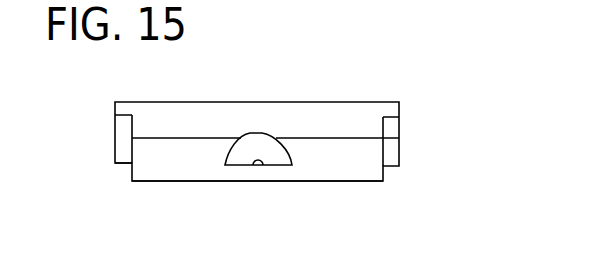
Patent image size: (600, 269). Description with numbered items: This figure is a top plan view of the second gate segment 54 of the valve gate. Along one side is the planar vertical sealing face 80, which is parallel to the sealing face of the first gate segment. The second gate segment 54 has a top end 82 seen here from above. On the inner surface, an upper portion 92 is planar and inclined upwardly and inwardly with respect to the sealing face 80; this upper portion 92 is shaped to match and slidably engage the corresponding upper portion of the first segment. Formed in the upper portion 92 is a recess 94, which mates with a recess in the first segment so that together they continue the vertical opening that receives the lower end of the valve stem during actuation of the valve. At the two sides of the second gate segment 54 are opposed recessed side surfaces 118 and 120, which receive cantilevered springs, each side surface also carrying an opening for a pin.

The second gate segment 54 is at (445, 103).
The sealing face 80 is at (272, 102).
The top end 82 is at (333, 122).
The upper portion 92 is at (340, 163).
The recess 94 is at (248, 148).
The recessed side surface 118 is at (384, 154).
The recessed side surface 120 is at (133, 147).